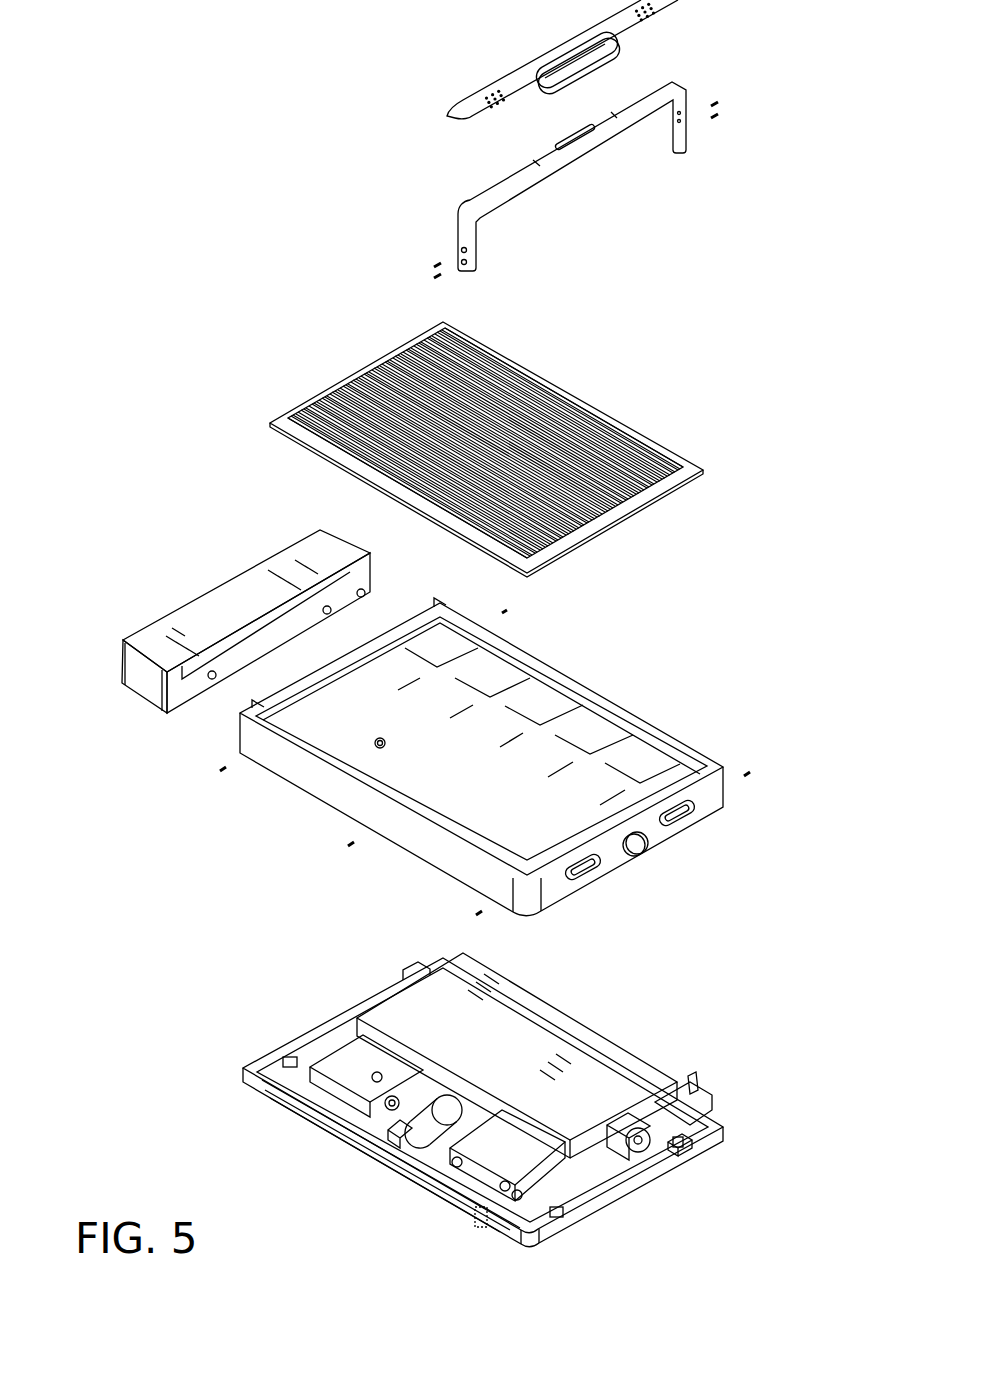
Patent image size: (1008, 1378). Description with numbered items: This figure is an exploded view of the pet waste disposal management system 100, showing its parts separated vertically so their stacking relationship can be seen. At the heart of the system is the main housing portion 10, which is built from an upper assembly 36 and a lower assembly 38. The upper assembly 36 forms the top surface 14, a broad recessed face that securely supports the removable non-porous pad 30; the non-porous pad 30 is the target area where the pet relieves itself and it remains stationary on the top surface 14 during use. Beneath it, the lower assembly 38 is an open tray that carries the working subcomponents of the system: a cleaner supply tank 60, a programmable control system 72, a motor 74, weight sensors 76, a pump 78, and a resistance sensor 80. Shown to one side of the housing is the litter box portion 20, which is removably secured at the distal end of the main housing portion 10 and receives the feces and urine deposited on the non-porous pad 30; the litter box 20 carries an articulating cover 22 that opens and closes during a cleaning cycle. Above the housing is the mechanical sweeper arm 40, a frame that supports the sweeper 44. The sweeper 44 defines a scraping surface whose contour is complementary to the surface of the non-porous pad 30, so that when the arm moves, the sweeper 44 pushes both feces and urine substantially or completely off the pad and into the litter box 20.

The pet waste disposal management system 100 is at (98, 41).
The main housing portion 10 is at (842, 651).
The top surface 14 is at (490, 791).
The litter box portion 20 is at (234, 554).
The articulating cover 22 is at (178, 618).
The non-porous pad 30 is at (590, 391).
The upper assembly 36 is at (742, 797).
The lower assembly 38 is at (724, 1080).
The mechanical sweeper arm 40 is at (470, 204).
The sweeper 44 is at (507, 80).
The cleaner supply tank 60 is at (350, 1066).
The programmable control system 72 is at (503, 1143).
The motor 74 is at (630, 1153).
The weight sensors 76 is at (290, 1060).
The pump 78 is at (443, 1112).
The resistance sensor 80 is at (673, 1157).